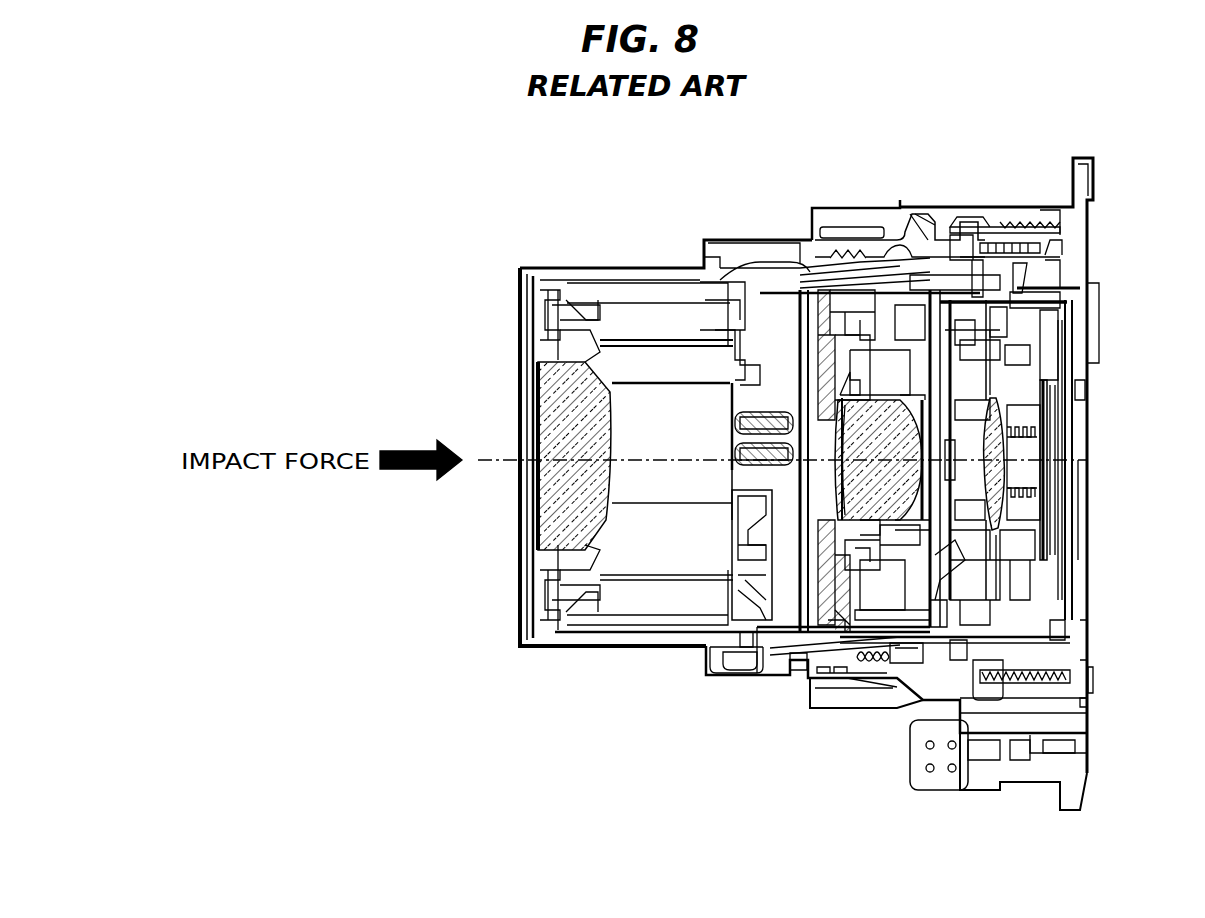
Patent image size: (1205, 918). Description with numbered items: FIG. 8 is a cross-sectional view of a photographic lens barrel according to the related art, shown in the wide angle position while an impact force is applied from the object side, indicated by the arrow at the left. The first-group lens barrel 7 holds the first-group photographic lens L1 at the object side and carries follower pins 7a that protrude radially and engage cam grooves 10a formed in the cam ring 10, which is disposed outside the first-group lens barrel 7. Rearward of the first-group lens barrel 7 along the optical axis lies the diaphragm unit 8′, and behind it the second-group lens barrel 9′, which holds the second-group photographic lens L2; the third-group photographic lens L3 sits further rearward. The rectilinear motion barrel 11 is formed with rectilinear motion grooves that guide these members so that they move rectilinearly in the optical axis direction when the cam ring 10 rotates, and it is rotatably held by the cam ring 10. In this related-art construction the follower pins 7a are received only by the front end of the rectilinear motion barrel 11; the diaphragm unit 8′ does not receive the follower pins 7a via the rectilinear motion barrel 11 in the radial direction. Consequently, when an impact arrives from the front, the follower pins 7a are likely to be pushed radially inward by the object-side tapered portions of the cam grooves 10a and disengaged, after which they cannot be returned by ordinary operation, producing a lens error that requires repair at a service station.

The first-group photographic lens L1 is at (562, 397).
The second-group photographic lens L2 is at (857, 430).
The third-group photographic lens L3 is at (997, 467).
The first-group lens barrel 7 is at (592, 642).
The follower pins 7a is at (743, 664).
The diaphragm unit 8′ is at (818, 607).
The second-group lens barrel 9′ is at (934, 620).
The cam ring 10 is at (833, 664).
The cam grooves 10a is at (762, 664).
The rectilinear motion barrel 11 is at (790, 630).